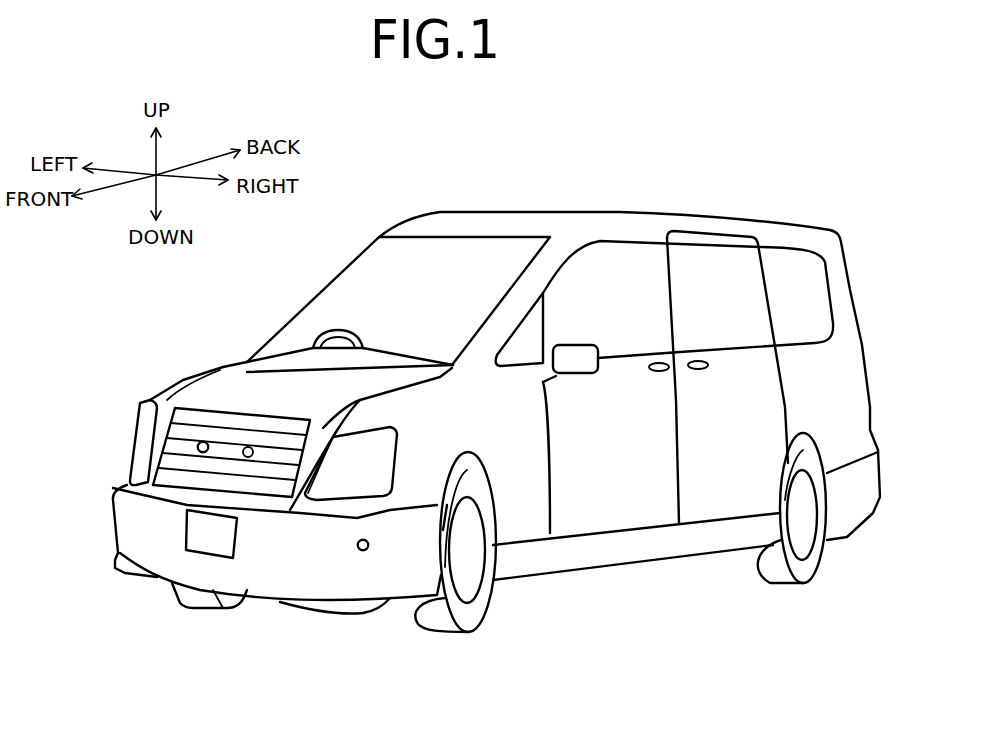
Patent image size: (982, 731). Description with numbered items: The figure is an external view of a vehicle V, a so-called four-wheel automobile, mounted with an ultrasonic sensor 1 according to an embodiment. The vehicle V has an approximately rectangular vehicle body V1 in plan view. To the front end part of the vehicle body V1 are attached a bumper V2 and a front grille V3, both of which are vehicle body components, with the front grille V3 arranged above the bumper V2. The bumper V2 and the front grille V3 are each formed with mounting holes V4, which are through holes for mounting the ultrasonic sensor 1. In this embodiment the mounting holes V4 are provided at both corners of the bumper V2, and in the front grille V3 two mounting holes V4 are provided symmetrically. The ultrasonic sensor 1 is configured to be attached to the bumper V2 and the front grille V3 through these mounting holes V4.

The vehicle V is at (843, 218).
The vehicle body V1 is at (632, 550).
The bumper V2 is at (397, 580).
The front grille V3 is at (167, 465).
The mounting hole V4 is at (200, 443).
The ultrasonic sensor 1 is at (206, 443).